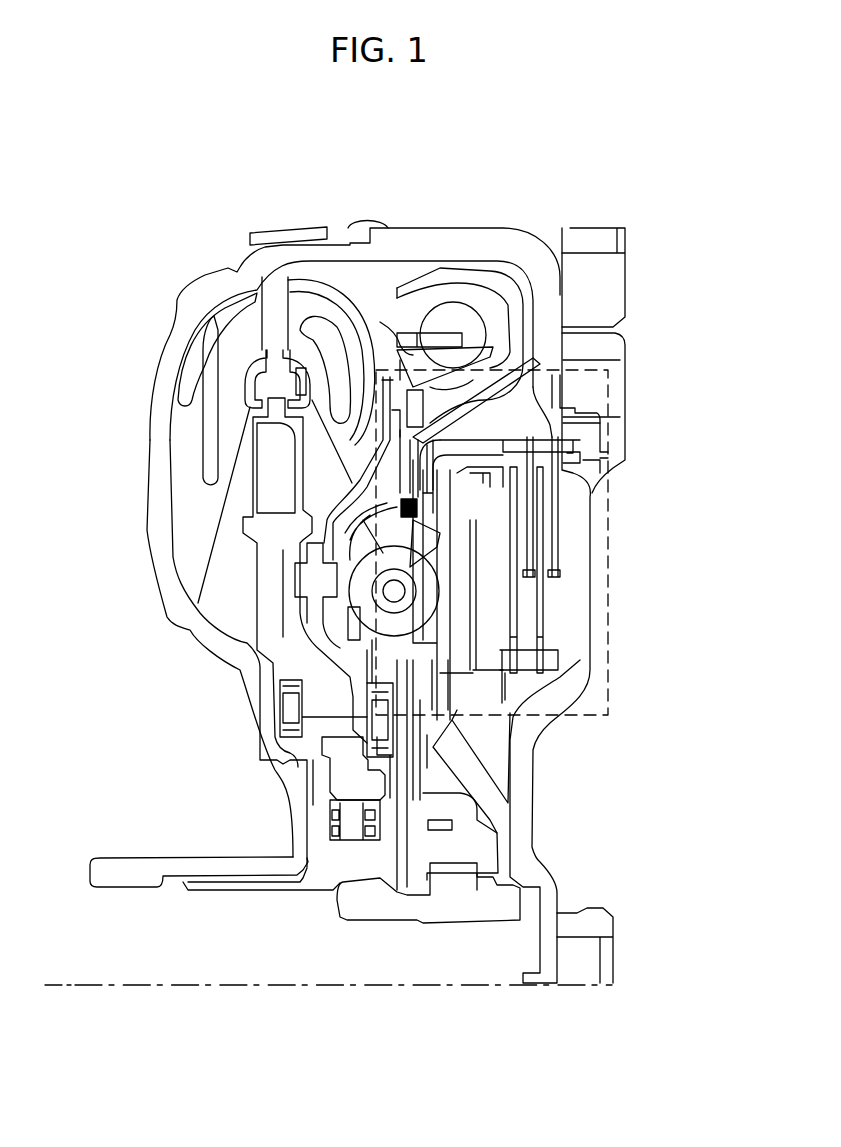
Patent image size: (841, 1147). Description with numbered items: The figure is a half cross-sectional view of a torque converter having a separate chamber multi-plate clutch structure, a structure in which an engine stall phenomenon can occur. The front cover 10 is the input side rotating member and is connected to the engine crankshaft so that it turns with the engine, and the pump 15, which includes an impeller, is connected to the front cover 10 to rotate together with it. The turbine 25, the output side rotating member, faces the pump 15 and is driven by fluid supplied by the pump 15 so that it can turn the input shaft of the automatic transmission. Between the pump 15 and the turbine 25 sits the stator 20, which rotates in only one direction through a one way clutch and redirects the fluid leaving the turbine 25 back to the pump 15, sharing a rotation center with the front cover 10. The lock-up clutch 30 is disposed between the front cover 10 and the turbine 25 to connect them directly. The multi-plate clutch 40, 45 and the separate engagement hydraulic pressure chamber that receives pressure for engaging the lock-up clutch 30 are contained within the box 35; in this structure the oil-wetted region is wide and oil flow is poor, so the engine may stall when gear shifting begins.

The front cover 10 is at (160, 523).
The pump 15 is at (182, 445).
The stator 20 is at (272, 613).
The turbine 25 is at (317, 307).
The lock-up clutch 30 is at (515, 318).
The box 35 is at (608, 488).
The multi-plate clutch 40 is at (530, 555).
The multi-plate clutch 45 is at (513, 628).